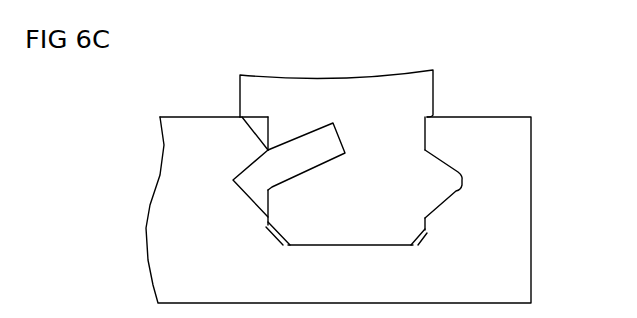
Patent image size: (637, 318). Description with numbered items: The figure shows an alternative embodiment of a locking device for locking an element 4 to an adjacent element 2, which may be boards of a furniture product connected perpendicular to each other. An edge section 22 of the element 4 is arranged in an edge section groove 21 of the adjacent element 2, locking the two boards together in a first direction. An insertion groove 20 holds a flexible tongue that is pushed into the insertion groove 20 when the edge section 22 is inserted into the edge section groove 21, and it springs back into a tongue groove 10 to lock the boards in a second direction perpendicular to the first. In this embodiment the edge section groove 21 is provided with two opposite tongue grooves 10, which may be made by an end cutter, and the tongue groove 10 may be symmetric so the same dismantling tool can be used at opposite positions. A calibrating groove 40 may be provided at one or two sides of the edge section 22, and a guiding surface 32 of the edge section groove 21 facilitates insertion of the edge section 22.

The adjacent element 2 is at (505, 198).
The element 4 is at (377, 107).
The tongue groove 10 is at (233, 183).
The insertion groove 20 is at (288, 158).
The edge section groove 21 is at (263, 226).
The edge section 22 is at (352, 216).
The guiding surface 32 is at (250, 122).
The calibrating groove 40 is at (242, 117).